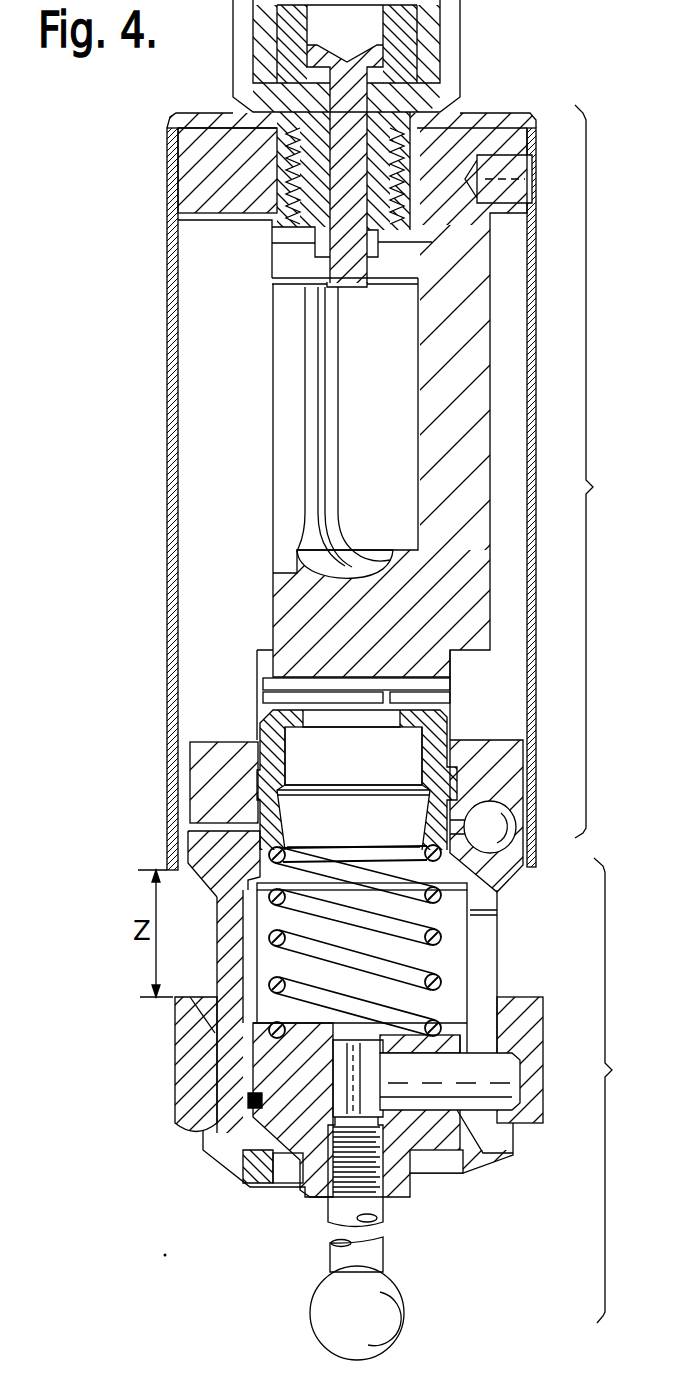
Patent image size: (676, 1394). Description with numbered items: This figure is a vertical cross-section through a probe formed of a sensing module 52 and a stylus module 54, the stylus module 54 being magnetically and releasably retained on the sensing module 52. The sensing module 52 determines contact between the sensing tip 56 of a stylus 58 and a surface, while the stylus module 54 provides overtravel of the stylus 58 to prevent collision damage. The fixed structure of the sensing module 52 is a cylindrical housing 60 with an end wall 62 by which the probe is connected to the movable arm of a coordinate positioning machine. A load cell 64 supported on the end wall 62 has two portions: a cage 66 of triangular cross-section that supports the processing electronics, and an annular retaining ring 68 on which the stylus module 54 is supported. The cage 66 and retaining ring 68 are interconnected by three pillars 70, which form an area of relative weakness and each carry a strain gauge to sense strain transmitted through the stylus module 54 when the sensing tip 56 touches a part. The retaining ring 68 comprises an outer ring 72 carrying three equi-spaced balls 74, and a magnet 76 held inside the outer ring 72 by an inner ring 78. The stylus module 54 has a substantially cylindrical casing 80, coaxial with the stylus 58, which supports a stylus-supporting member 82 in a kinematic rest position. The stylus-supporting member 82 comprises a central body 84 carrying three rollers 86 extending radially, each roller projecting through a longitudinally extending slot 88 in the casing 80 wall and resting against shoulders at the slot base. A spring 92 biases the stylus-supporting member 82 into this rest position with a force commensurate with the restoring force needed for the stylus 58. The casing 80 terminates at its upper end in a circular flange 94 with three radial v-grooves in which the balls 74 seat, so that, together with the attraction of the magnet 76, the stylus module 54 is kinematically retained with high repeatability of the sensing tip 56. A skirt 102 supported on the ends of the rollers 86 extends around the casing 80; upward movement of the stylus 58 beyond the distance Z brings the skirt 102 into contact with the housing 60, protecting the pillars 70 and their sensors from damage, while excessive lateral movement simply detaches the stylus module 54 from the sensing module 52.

The sensing module 52 is at (602, 471).
The stylus module 54 is at (621, 1090).
The sensing tip 56 is at (393, 1304).
The stylus 58 is at (333, 1256).
The cylindrical housing 60 is at (167, 531).
The end wall 62 is at (500, 118).
The load cell 64 is at (270, 607).
The cage 66 is at (273, 408).
The annular retaining ring 68 is at (193, 791).
The pillars 70 is at (258, 700).
The outer ring 72 is at (512, 781).
The balls 74 is at (505, 822).
The magnet 76 is at (410, 750).
The inner ring 78 is at (287, 766).
The cylindrical casing 80 is at (487, 898).
The stylus-supporting member 82 is at (260, 1097).
The central body 84 is at (437, 1150).
The rollers 86 is at (522, 1082).
The slot 88 is at (486, 915).
The spring 92 is at (440, 980).
The circular flange 94 is at (197, 845).
The skirt 102 is at (178, 1027).